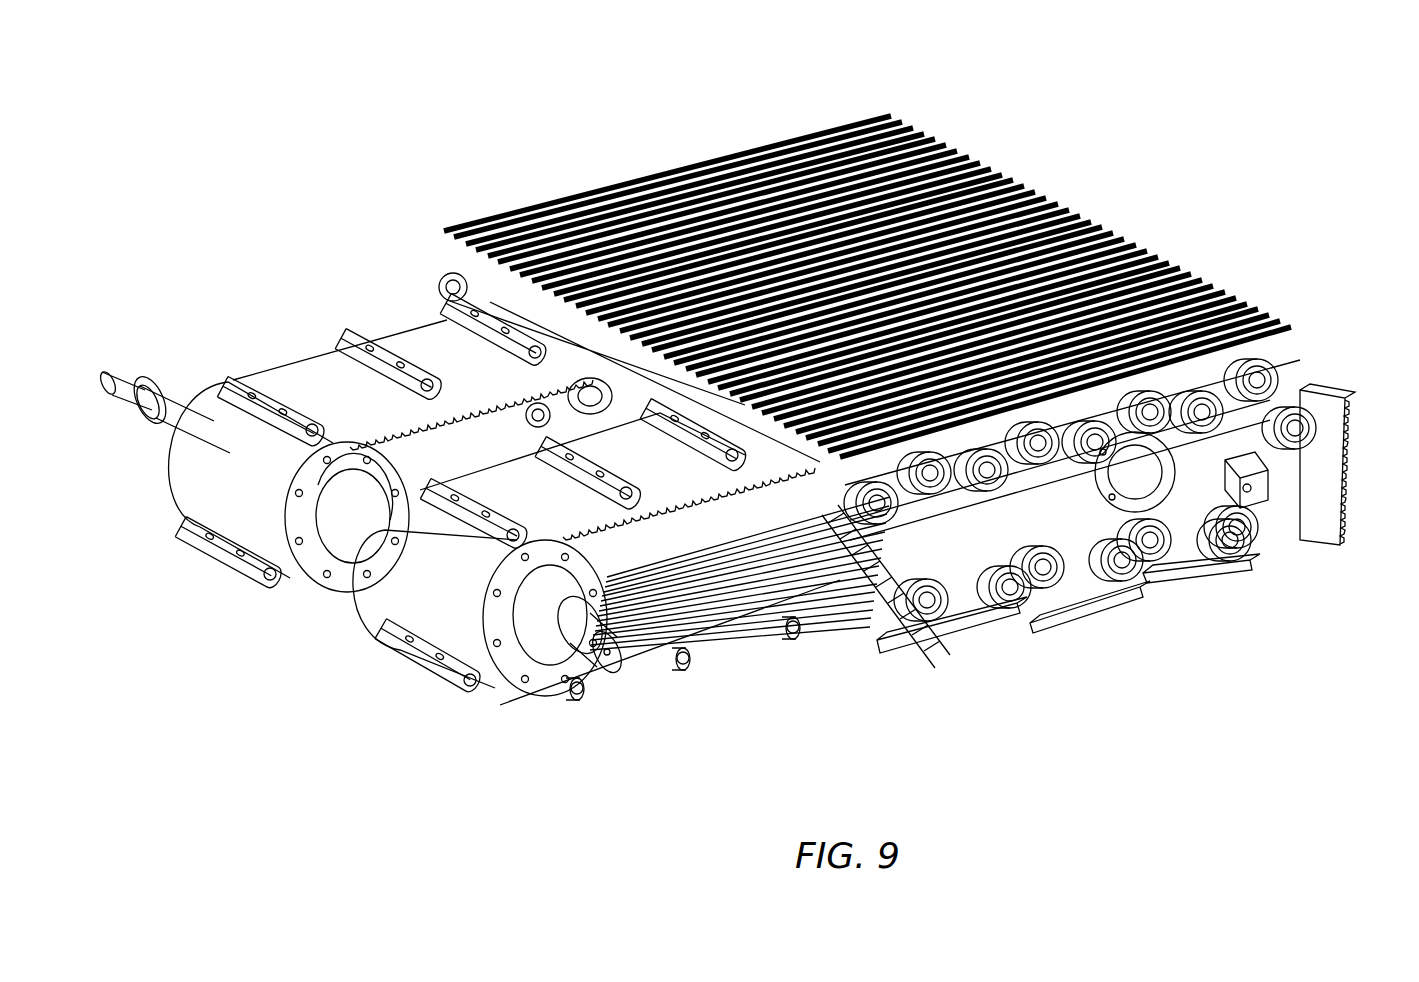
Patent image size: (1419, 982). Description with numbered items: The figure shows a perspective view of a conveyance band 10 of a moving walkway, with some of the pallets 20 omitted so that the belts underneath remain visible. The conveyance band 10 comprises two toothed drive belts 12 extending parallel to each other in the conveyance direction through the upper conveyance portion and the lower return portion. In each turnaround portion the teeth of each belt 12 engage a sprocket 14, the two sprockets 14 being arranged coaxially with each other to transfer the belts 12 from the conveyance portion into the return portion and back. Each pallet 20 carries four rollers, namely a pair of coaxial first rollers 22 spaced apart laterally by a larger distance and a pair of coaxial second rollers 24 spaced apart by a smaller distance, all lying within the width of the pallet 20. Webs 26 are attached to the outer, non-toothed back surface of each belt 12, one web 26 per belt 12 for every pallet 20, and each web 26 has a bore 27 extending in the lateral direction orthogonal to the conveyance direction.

The conveyance band 10 is at (1103, 138).
The drive belt 12 is at (305, 377).
The sprocket 14 is at (362, 571).
The pallet 20 is at (838, 105).
The first roller 22 is at (857, 512).
The second roller 24 is at (913, 500).
The web 26 is at (247, 388).
The bore 27 is at (308, 432).